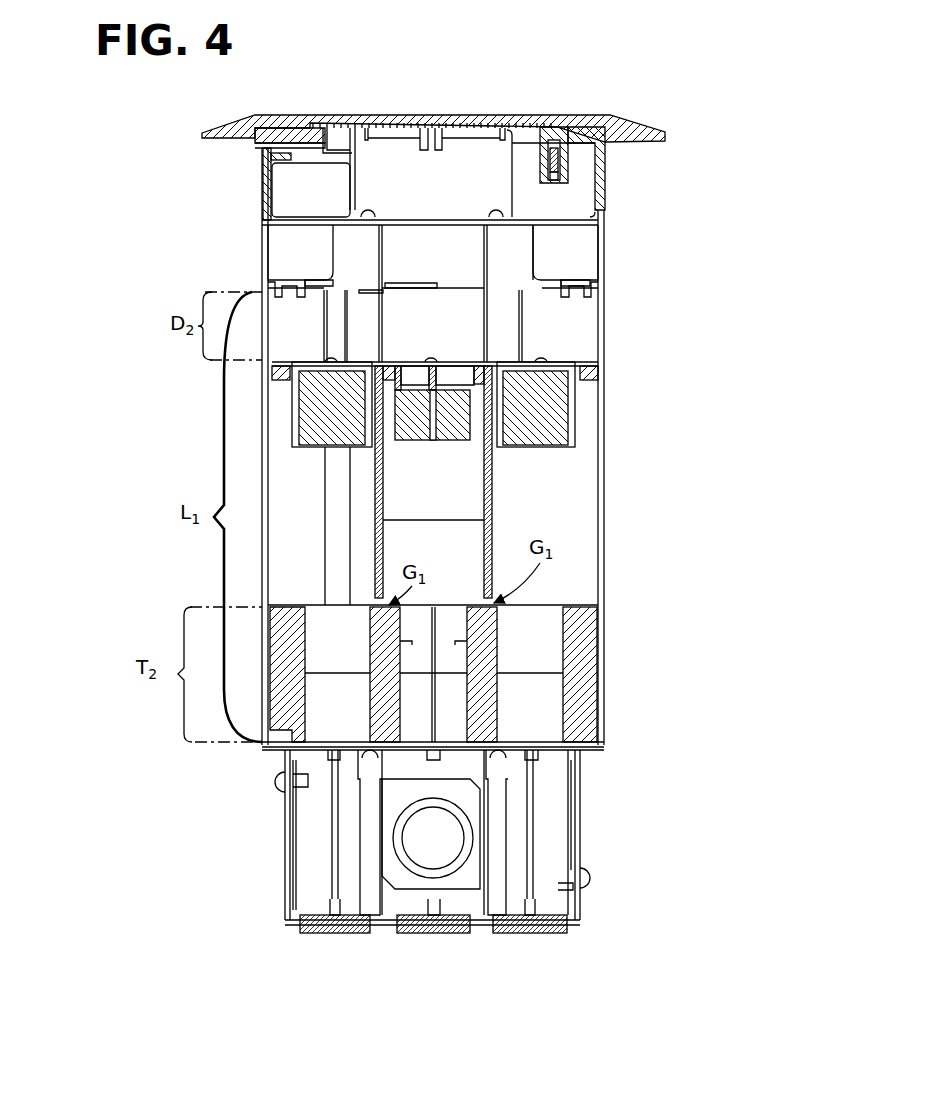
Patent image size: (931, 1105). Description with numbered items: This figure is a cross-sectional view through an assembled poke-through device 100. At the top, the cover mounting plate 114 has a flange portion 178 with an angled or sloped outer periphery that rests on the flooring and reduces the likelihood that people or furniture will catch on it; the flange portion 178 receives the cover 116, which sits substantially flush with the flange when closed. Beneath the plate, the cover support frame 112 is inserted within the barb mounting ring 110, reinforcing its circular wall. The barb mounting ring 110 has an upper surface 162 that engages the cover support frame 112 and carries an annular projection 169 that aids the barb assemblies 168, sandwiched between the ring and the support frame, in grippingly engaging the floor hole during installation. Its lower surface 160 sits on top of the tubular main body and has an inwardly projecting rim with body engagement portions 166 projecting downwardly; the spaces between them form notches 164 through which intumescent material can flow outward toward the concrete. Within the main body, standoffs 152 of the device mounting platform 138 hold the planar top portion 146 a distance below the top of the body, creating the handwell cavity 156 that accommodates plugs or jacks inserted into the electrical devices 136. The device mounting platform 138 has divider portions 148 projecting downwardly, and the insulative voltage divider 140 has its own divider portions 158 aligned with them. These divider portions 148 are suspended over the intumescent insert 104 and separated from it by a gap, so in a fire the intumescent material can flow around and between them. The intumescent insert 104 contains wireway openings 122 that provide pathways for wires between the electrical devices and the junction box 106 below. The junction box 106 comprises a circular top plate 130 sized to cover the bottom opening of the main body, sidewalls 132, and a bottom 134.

The poke-through device 100 is at (706, 125).
The intumescent insert 104 is at (572, 634).
The junction box 106 is at (597, 815).
The barb mounting ring 110 is at (267, 266).
The cover support frame 112 is at (605, 182).
The cover mounting plate 114 is at (580, 118).
The cover 116 is at (367, 116).
The wireway openings 122 is at (452, 663).
The top plate 130 is at (290, 750).
The sidewalls 132 is at (580, 841).
The bottom 134 is at (393, 932).
The electrical devices 136 is at (330, 437).
The device mounting platform 138 is at (597, 361).
The voltage divider 140 is at (508, 505).
The planar top portion 146 is at (592, 374).
The divider portions 148 is at (392, 368).
The standoffs 152 is at (361, 318).
The handwell cavity 156 is at (433, 302).
The divider portions 158 is at (487, 553).
The lower surface 160 is at (614, 272).
The upper surface 162 is at (263, 214).
The notches 164 is at (444, 284).
The body engagement portions 166 is at (307, 284).
The barb assemblies 168 is at (297, 300).
The annular projection 169 is at (247, 219).
The flange portion 178 is at (262, 131).